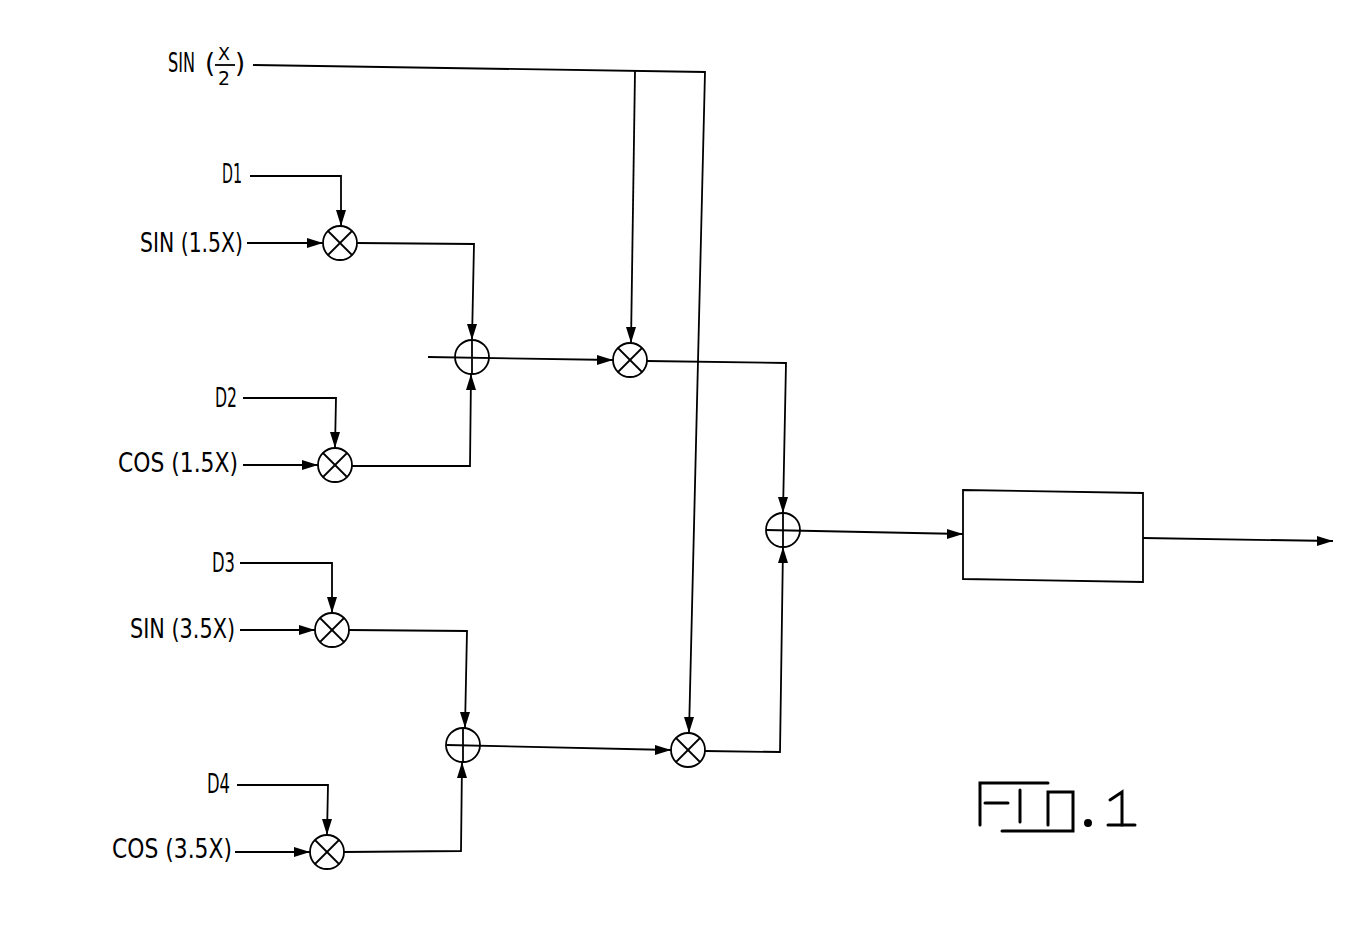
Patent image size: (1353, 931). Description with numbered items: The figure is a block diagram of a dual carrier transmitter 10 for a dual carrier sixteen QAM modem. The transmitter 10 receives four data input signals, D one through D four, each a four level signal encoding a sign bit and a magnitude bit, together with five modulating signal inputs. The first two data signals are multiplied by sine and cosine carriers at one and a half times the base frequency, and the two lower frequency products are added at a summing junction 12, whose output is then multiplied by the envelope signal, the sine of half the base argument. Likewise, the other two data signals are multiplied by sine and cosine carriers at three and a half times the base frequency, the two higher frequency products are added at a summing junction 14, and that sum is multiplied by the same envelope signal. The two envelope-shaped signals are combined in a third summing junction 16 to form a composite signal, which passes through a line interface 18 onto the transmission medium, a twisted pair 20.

The dual carrier transmitter 10 is at (1070, 281).
The summing junction 12 is at (484, 343).
The summing junction 14 is at (479, 731).
The third summing junction 16 is at (796, 546).
The line interface 18 is at (997, 490).
The twisted pair 20 is at (1242, 538).